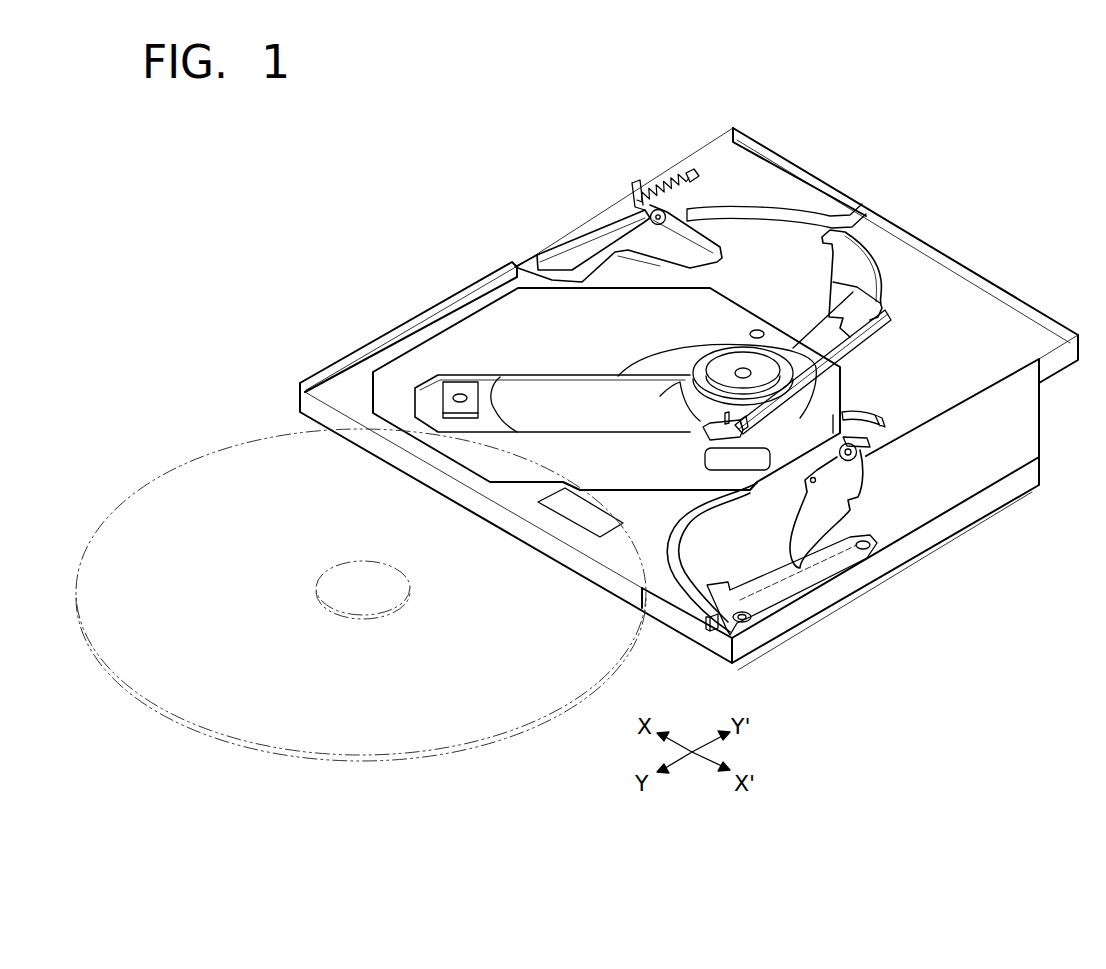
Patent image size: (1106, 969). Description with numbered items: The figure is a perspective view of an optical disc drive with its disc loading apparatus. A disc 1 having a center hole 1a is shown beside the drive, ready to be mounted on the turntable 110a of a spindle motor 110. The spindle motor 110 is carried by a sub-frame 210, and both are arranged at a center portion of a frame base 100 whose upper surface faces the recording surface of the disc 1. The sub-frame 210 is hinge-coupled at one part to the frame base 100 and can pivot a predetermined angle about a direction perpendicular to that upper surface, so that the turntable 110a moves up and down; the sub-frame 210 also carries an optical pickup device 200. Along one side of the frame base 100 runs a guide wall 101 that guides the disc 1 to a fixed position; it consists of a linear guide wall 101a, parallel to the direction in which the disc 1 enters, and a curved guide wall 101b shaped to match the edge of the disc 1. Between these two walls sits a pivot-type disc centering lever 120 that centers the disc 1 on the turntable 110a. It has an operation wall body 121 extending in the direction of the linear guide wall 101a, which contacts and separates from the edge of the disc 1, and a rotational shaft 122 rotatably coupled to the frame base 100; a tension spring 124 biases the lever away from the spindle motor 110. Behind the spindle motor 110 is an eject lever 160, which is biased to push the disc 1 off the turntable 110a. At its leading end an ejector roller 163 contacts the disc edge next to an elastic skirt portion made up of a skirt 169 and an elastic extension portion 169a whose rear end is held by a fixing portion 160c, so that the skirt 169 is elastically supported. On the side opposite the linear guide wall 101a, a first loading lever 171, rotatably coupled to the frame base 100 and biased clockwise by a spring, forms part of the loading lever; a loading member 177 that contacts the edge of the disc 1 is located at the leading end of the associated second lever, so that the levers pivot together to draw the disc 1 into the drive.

The disc 1 is at (361, 578).
The center hole 1a is at (328, 573).
The frame base 100 is at (1035, 251).
The guide wall 101 is at (583, 217).
The linear guide wall 101a is at (490, 273).
The curved guide wall 101b is at (749, 144).
The spindle motor 110 is at (723, 352).
The turntable 110a is at (762, 365).
The disc centering lever 120 is at (618, 200).
The operation wall body 121 is at (575, 236).
The rotational shaft 122 is at (632, 202).
The tension spring 124 is at (668, 188).
The eject lever 160 is at (836, 306).
The fixing portion 160c is at (840, 393).
The ejector roller 163 is at (727, 412).
The skirt 169 is at (684, 385).
The elastic extension portion 169a is at (743, 402).
The first loading lever 171 is at (797, 552).
The loading member 177 is at (747, 612).
The optical pickup device 200 is at (493, 412).
The sub-frame 210 is at (524, 351).